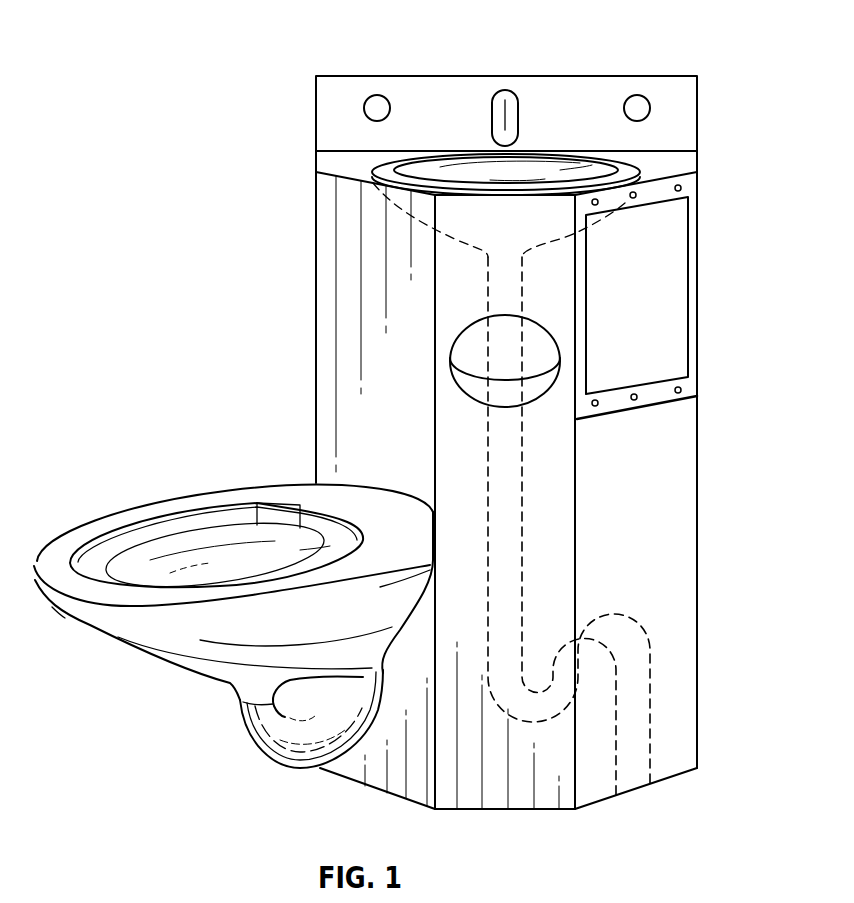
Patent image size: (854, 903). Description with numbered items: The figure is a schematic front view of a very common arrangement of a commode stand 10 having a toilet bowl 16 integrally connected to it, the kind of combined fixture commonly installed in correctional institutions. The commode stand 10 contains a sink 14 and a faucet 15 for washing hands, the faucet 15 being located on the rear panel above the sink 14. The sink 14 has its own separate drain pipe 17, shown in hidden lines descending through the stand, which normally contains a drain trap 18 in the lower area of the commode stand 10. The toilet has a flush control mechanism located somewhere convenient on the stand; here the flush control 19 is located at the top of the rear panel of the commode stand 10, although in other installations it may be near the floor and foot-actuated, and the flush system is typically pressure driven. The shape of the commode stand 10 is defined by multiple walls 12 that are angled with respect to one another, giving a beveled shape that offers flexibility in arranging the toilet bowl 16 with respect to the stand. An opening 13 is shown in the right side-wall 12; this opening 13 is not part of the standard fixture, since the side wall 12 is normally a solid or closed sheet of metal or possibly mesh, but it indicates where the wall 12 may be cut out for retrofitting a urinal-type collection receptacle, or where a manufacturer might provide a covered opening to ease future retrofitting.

The commode stand 10 is at (397, 407).
The walls 12 is at (663, 455).
The opening 13 is at (665, 263).
The sink 14 is at (480, 223).
The faucet 15 is at (492, 102).
The toilet bowl 16 is at (88, 622).
The drain pipe 17 is at (507, 598).
The drain trap 18 is at (627, 617).
The flush control 19 is at (376, 104).